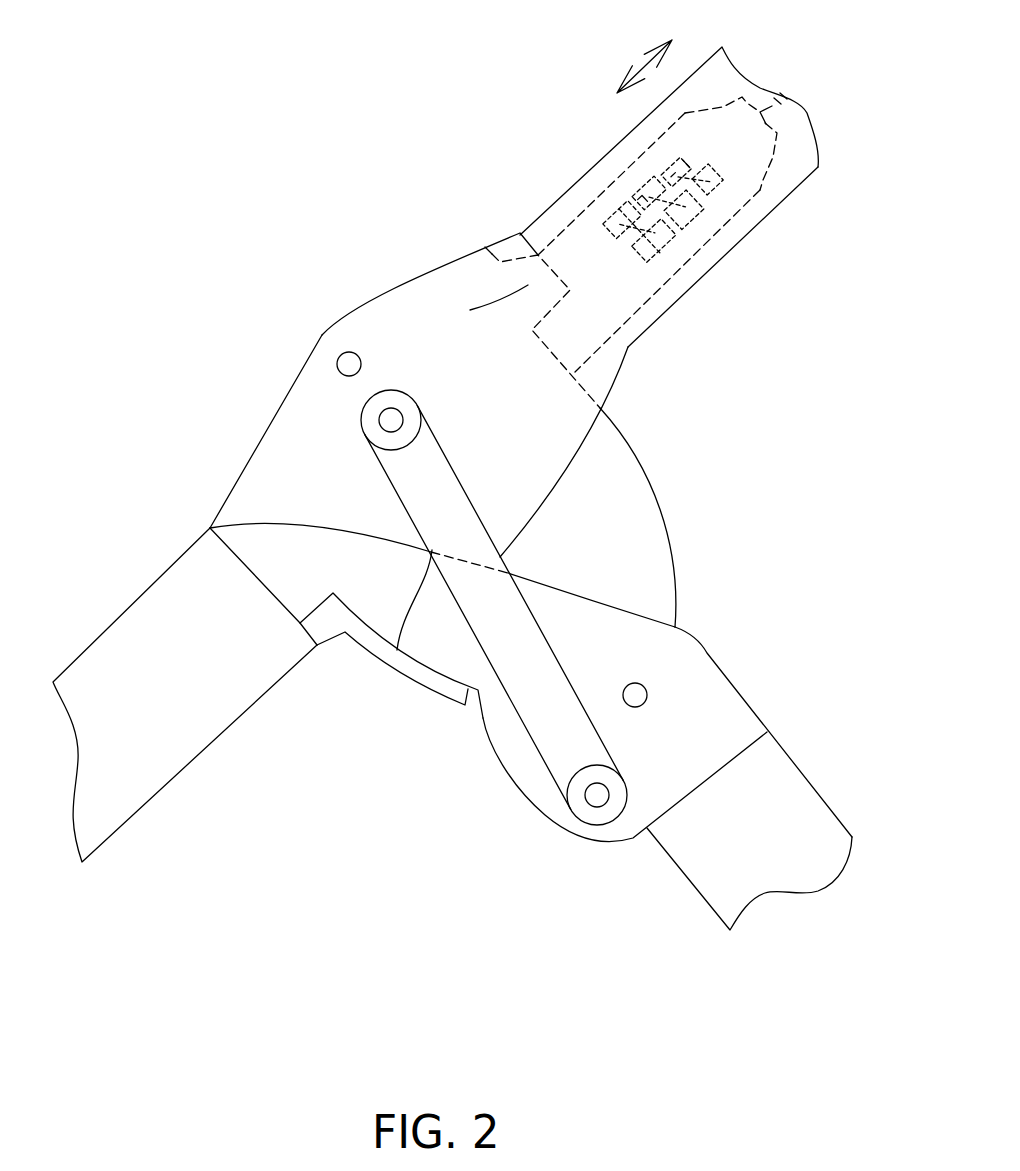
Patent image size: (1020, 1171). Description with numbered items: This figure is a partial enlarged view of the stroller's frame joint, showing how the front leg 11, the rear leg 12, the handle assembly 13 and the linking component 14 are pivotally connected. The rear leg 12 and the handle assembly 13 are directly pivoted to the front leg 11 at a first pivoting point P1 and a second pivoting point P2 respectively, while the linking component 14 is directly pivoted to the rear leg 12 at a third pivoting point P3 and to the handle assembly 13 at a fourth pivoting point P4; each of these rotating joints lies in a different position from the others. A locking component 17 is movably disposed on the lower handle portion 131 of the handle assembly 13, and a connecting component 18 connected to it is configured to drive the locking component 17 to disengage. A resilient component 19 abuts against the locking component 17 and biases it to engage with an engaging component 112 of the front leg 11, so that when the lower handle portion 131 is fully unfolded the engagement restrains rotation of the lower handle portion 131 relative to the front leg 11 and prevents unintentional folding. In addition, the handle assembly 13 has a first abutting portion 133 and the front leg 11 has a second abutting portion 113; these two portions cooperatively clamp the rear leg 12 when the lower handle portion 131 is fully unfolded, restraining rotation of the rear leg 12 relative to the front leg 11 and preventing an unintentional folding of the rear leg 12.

The front leg 11 is at (137, 633).
The rear leg 12 is at (755, 865).
The handle assembly 13 is at (797, 267).
The lower handle portion 131 is at (657, 313).
The first abutting portion 133 is at (460, 555).
The linking component 14 is at (538, 693).
The locking component 17 is at (580, 250).
The connecting component 18 is at (792, 112).
The resilient component 19 is at (648, 188).
The engaging component 112 is at (470, 310).
The second abutting portion 113 is at (395, 662).
The first pivoting point P1 is at (635, 695).
The second pivoting point P2 is at (349, 364).
The third pivoting point P3 is at (597, 795).
The fourth pivoting point P4 is at (391, 420).